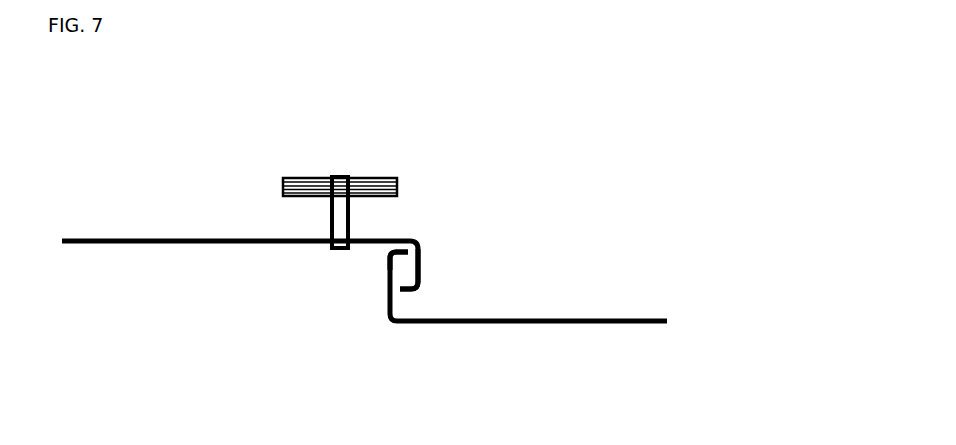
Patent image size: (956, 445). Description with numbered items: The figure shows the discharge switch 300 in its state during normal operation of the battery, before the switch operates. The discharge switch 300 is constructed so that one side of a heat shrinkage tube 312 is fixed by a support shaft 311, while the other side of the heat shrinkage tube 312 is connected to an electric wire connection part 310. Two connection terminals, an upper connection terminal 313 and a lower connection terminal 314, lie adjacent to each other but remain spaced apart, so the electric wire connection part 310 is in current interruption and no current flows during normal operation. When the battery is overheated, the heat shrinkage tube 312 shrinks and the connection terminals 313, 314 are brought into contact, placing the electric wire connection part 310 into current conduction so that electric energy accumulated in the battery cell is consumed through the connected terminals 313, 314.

The discharge switch 300 is at (80, 112).
The electric wire connection part 310 is at (330, 247).
The support shaft 311 is at (365, 177).
The heat shrinkage tube 312 is at (330, 212).
The upper connection terminal 313 is at (424, 254).
The lower connection terminal 314 is at (600, 322).